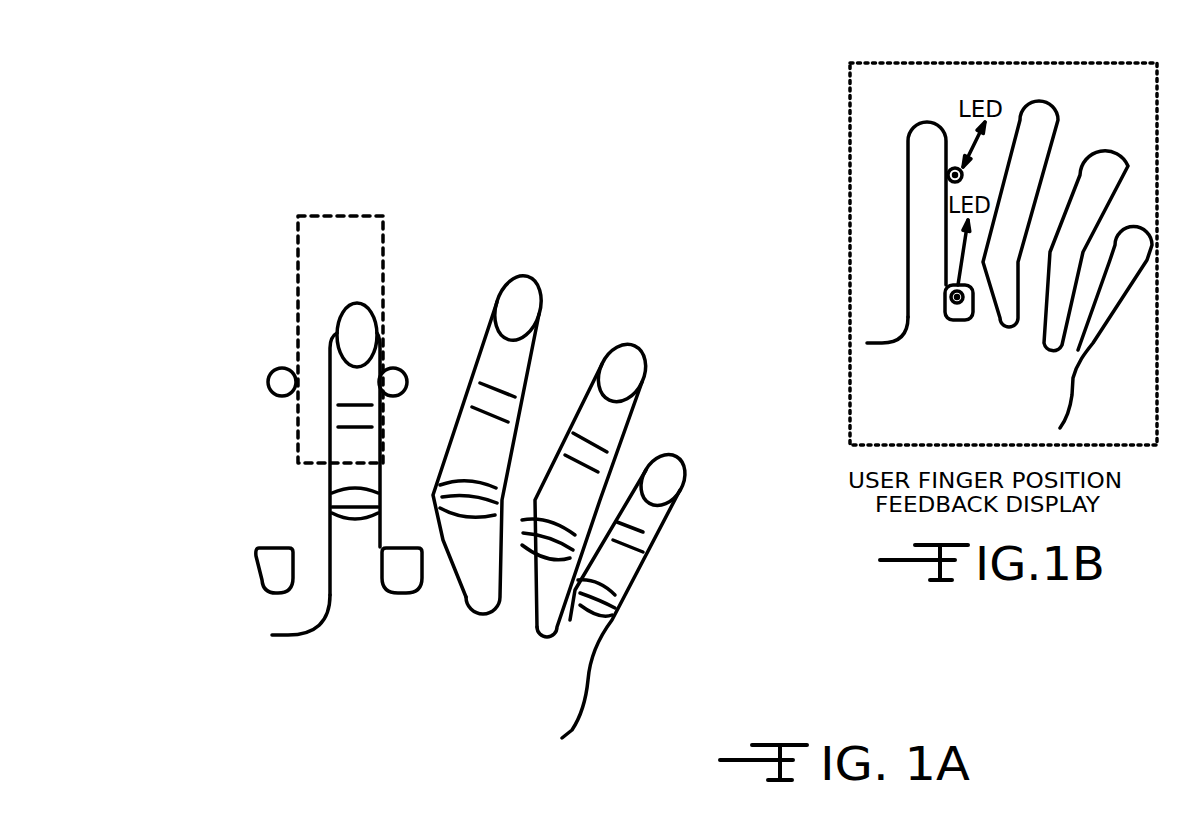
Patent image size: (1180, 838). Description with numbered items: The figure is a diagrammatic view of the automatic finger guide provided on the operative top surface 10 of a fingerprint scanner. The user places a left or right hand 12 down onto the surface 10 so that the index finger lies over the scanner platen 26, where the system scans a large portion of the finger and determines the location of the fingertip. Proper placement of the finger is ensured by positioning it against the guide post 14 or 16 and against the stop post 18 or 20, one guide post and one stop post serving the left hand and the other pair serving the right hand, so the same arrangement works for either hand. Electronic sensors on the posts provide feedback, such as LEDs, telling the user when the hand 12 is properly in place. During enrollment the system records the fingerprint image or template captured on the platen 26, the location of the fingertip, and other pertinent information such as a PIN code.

In FIG. 1A, the top surface 10 is at (460, 304).
In FIG. 1B, the top surface 10 is at (1065, 147).
In FIG. 1A, the hand 12 is at (378, 660).
In FIG. 1B, the hand 12 is at (998, 372).
In FIG. 1A, the guide post 14 is at (284, 390).
In FIG. 1A, the guide post 16 is at (394, 390).
In FIG. 1A, the stop post 18 is at (278, 564).
In FIG. 1A, the stop post 20 is at (398, 567).
In FIG. 1A, the scanner platen 26 is at (330, 256).